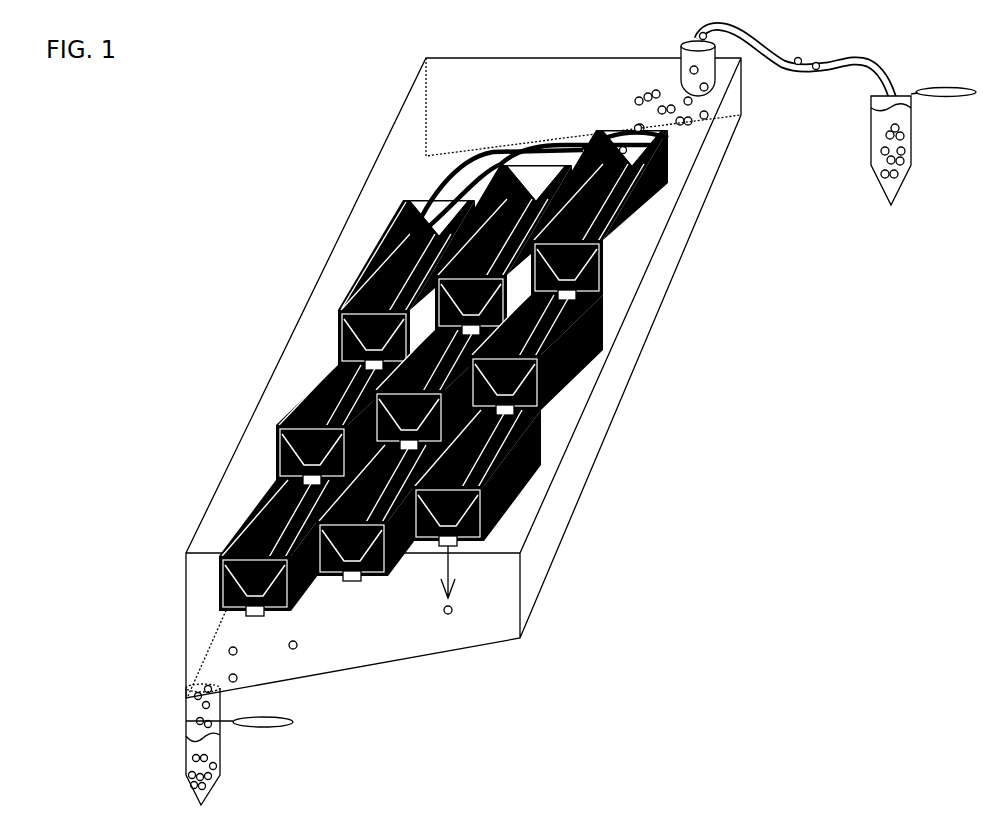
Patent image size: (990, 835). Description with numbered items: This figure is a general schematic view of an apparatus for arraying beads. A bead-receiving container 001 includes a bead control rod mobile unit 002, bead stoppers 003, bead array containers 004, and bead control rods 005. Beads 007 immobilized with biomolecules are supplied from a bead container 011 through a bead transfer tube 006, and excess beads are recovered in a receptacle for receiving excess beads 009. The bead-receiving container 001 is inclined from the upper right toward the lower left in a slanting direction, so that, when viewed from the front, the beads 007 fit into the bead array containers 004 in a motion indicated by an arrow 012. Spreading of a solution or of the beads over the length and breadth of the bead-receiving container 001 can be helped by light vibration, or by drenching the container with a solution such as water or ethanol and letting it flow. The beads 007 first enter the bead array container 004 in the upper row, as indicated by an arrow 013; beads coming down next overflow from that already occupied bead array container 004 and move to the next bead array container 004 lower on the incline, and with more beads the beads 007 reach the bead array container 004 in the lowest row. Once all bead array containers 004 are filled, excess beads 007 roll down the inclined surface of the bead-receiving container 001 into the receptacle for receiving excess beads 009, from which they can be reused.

The bead-receiving container 001 is at (565, 490).
The bead control rod mobile unit 002 is at (572, 139).
The bead stoppers 003 is at (247, 608).
The bead array containers 004 is at (627, 218).
The bead control rods 005 is at (372, 235).
The bead transfer tube 006 is at (837, 65).
The beads 007 is at (870, 172).
The receptacle for receiving excess beads 009 is at (213, 747).
The bead container 011 is at (902, 162).
The arrow 012 is at (478, 142).
The arrow 013 is at (640, 165).